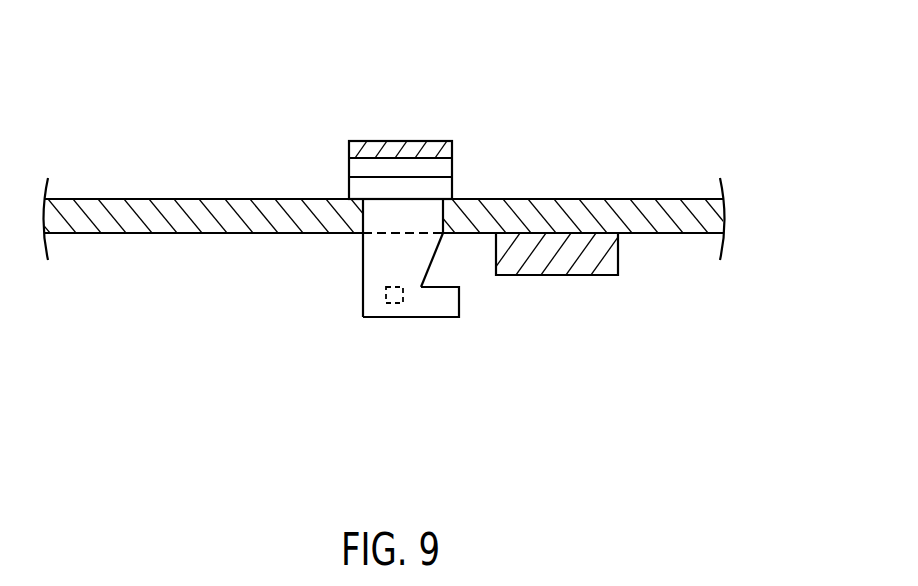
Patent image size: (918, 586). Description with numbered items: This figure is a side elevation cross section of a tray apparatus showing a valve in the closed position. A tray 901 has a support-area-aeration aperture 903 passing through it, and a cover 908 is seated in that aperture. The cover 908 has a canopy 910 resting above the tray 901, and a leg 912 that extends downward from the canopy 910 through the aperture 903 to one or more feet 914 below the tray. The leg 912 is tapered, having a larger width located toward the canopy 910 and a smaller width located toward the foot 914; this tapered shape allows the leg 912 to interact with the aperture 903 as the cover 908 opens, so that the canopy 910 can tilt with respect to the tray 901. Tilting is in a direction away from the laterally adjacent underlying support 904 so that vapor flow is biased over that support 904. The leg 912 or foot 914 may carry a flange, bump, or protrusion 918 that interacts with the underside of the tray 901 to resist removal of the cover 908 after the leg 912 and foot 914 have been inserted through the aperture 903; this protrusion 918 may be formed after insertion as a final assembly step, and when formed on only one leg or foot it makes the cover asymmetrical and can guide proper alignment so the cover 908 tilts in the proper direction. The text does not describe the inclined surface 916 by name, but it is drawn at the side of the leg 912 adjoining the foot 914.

The tray 901 is at (227, 218).
The aperture 903 is at (355, 233).
The underlying support 904 is at (608, 277).
The cover 908 is at (505, 242).
The canopy 910 is at (425, 148).
The leg 912 is at (363, 287).
The foot 914 is at (430, 310).
The inclined surface 916 is at (430, 262).
The flange, bump, or protrusion 918 is at (393, 305).